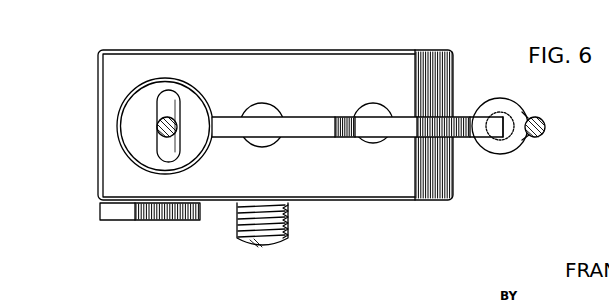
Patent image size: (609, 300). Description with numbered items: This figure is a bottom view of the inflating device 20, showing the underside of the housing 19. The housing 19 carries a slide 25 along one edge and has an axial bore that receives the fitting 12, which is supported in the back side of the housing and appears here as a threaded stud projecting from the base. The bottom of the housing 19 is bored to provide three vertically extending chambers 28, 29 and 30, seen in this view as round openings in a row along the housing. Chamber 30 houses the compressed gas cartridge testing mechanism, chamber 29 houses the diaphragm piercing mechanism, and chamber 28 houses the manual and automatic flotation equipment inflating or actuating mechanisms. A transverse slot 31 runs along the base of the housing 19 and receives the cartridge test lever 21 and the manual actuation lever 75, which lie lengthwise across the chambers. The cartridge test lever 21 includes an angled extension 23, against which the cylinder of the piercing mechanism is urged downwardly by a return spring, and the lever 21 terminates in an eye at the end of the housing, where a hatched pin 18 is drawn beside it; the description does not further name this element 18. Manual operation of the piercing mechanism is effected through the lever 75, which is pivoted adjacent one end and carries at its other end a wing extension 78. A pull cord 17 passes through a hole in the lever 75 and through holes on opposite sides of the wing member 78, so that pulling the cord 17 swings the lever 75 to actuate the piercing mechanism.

The fitting 12 is at (247, 243).
The pull cord 17 is at (157, 125).
The hinge pin 18 is at (541, 134).
The housing 19 is at (407, 52).
The inflating device 20 is at (323, 186).
The cartridge test lever 21 is at (490, 130).
The angled extension 23 is at (402, 132).
The slide 25 is at (178, 222).
The chamber 28 is at (168, 78).
The chamber 29 is at (270, 105).
The chamber 30 is at (368, 103).
The transverse slot 31 is at (317, 138).
The manual actuation lever 75 is at (283, 127).
The wing extension 78 is at (140, 150).